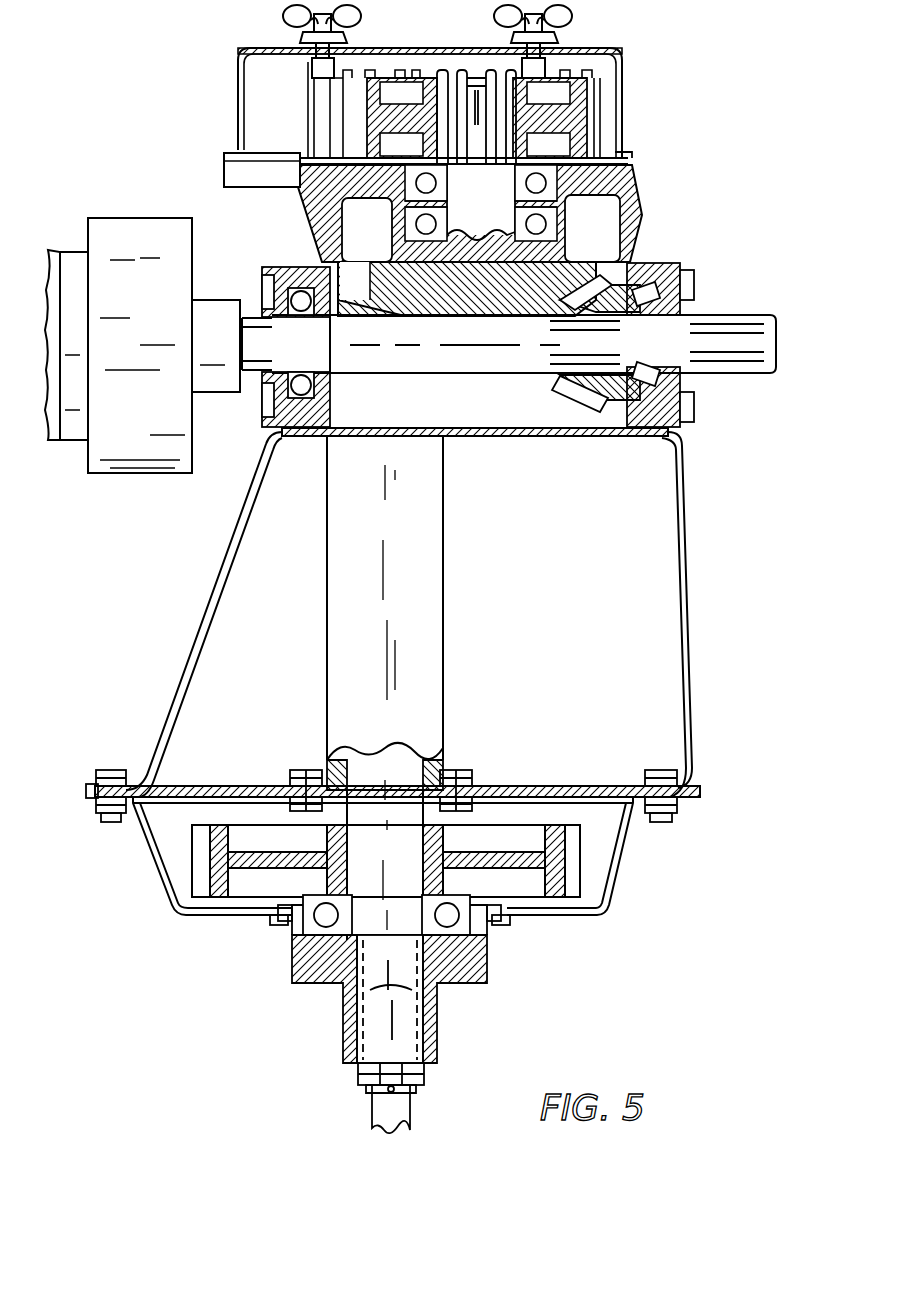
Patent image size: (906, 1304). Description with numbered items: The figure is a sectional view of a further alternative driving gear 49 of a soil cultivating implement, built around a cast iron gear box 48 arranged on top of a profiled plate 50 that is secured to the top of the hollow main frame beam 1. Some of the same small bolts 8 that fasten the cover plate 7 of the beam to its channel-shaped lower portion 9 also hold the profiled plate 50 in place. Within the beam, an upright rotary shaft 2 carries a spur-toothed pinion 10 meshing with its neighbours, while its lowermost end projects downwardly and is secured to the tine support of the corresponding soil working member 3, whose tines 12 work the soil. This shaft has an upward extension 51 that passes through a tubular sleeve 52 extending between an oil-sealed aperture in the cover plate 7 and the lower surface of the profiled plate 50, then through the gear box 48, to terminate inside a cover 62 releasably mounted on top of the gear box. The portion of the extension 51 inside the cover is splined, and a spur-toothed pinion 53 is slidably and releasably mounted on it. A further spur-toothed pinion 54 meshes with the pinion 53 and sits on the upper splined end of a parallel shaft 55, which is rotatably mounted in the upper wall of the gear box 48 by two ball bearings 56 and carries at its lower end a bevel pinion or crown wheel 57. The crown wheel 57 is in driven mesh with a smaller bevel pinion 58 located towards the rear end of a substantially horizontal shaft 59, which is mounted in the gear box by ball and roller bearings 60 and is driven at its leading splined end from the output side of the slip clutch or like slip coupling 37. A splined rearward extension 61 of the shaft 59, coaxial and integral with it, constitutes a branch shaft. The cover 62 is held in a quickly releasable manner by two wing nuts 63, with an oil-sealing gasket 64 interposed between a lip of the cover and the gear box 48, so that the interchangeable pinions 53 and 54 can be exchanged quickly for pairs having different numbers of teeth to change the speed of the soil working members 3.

The hollow main frame beam 1 is at (148, 858).
The upright rotary shaft 2 is at (415, 1020).
The soil working member 3 is at (343, 1038).
The cover plate 7 is at (95, 790).
The small bolts 8 is at (123, 772).
The lower portion 9 is at (160, 892).
The spur-toothed pinion 10 is at (580, 880).
The tine 12 is at (405, 1112).
The slip clutch or like slip coupling 37 is at (142, 222).
The gear box 48 is at (632, 178).
The driving gear 49 is at (648, 212).
The profiled plate 50 is at (220, 568).
The upward extension 51 is at (345, 735).
The tubular sleeve 52 is at (445, 676).
The spur-toothed pinion 53 is at (340, 78).
The further spur-toothed pinion 54 is at (605, 100).
The shaft 55 is at (477, 86).
The ball bearings 56 is at (556, 232).
The bevel pinion or crown wheel 57 is at (378, 262).
The smaller bevel pinion 58 is at (580, 396).
The substantially horizontal shaft 59 is at (466, 376).
The ball and roller bearings 60 is at (282, 268).
The splined rearward extension 61 is at (728, 374).
The cover 62 is at (618, 60).
The wing nuts 63 is at (284, 18).
The oil-sealing gasket 64 is at (626, 157).